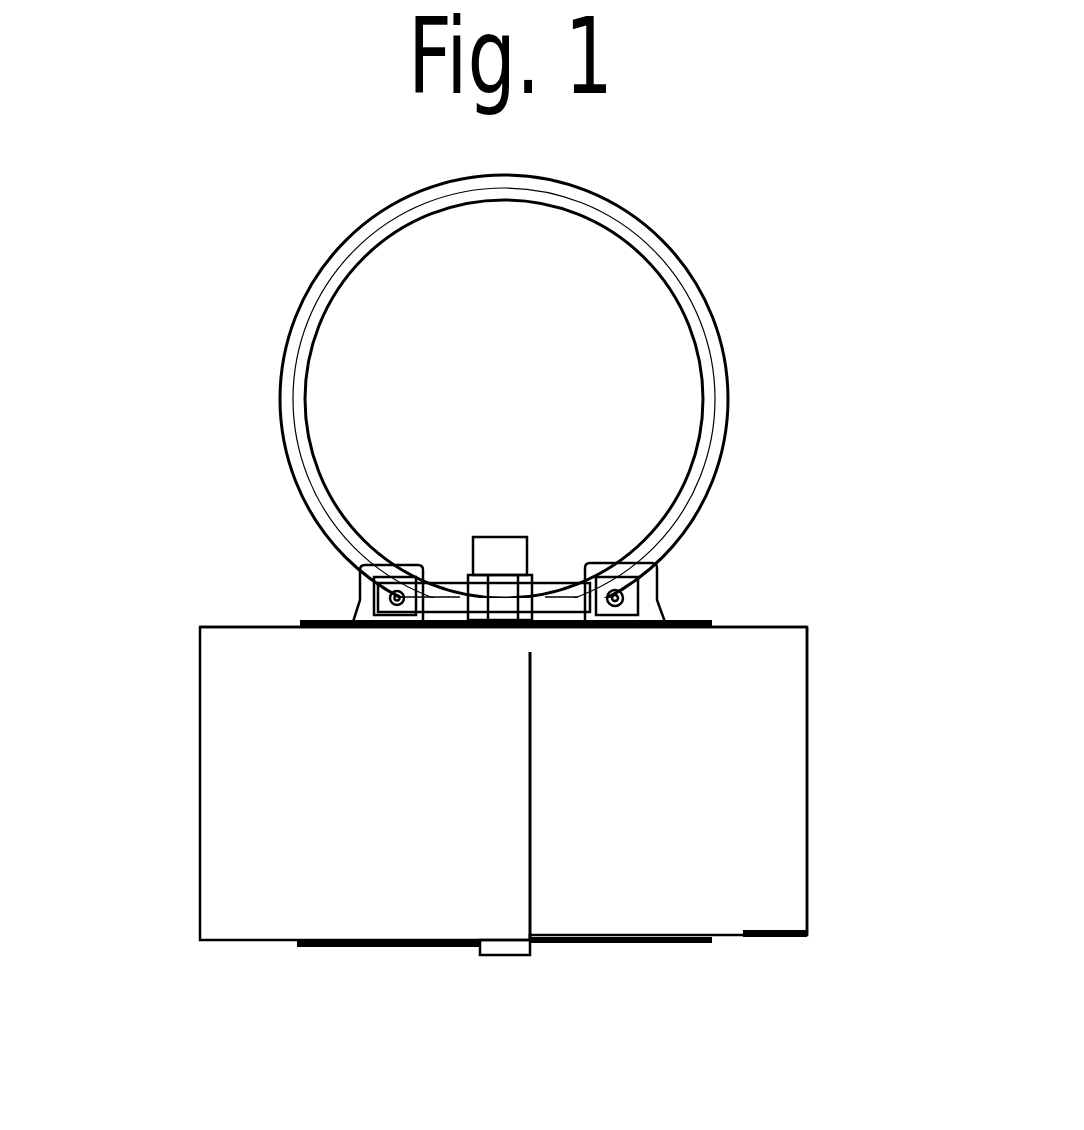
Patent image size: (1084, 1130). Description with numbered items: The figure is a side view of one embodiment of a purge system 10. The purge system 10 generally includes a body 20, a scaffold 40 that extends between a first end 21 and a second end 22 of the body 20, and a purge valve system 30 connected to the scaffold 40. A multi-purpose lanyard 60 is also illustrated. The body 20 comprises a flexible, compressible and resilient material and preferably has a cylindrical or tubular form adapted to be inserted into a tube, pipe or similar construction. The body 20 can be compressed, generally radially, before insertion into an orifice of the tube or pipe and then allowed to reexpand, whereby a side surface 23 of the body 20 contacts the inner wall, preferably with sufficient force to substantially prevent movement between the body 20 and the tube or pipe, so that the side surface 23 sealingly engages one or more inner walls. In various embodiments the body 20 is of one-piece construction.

The purge system 10 is at (314, 241).
The multi-purpose lanyard 60 is at (282, 408).
The purge valve system 30 is at (500, 532).
The scaffold 40 is at (718, 620).
The body 20 is at (501, 795).
The second end 22 is at (797, 620).
The side surface 23 is at (812, 780).
The first end 21 is at (776, 940).